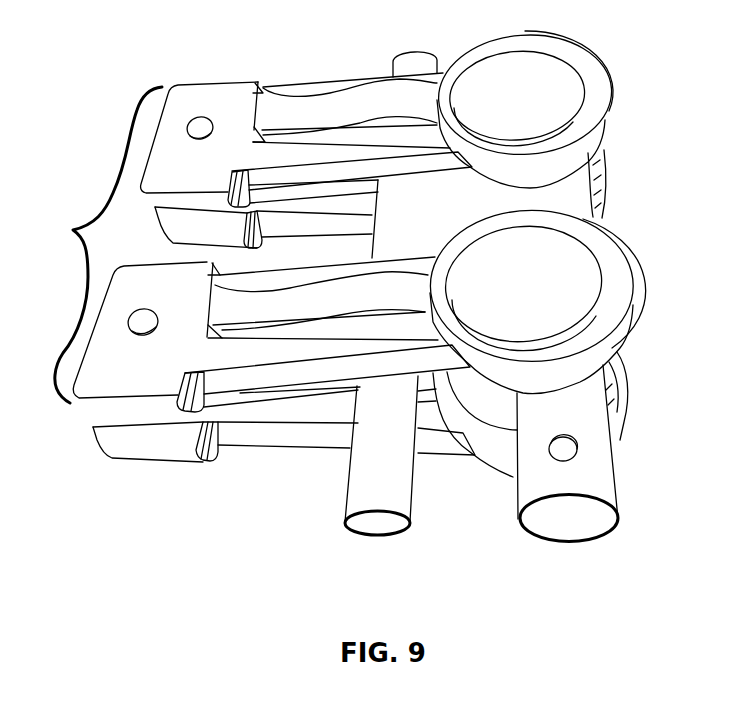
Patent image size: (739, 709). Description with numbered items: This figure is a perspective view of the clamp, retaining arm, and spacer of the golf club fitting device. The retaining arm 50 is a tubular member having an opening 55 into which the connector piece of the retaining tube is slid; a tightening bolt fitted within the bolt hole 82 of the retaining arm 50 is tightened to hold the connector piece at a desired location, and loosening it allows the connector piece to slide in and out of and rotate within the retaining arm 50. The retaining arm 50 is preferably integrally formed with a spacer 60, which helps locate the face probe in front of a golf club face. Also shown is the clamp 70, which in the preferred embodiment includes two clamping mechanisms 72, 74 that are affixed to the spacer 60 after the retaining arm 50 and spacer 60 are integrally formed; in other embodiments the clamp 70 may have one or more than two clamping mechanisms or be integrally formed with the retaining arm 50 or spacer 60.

The clamp 70 is at (261, 277).
The clamping mechanism 72 is at (192, 92).
The clamping mechanism 74 is at (157, 453).
The spacer 60 is at (355, 492).
The retaining arm 50 is at (595, 405).
The bolt hole 82 is at (577, 447).
The opening 55 is at (560, 497).